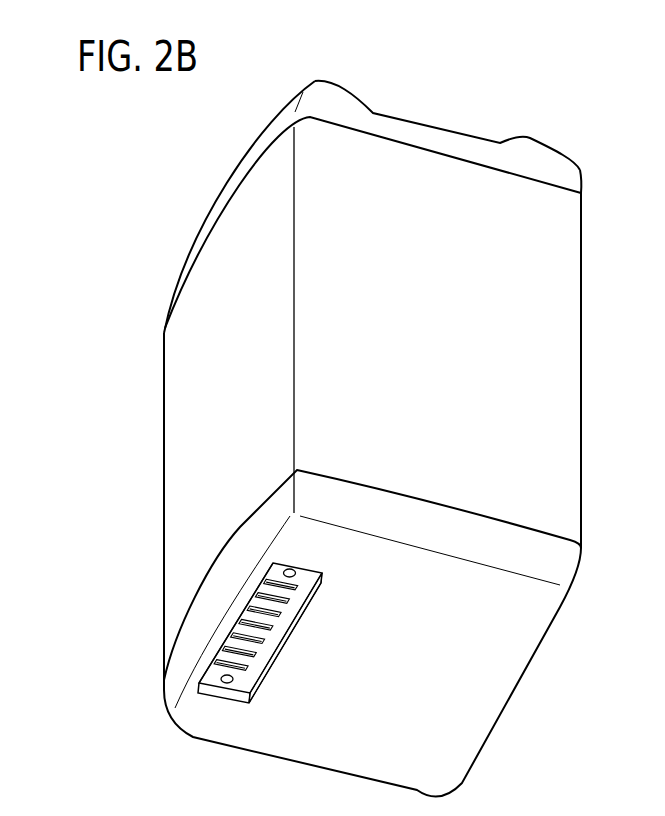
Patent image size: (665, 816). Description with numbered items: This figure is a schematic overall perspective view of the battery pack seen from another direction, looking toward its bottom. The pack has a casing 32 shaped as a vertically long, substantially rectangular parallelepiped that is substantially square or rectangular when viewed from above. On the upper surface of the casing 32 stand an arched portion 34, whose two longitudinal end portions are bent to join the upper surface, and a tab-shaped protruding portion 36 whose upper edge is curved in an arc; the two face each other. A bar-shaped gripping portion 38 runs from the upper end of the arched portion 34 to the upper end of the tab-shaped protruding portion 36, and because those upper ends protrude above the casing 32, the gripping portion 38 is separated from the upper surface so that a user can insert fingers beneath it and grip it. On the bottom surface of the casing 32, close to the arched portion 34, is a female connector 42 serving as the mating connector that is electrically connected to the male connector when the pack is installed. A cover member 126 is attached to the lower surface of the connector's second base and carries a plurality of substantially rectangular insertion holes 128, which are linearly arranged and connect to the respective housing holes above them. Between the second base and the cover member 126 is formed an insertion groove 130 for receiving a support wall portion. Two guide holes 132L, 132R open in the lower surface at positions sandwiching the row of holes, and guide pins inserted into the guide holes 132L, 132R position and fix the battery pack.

The casing 32 is at (570, 278).
The arched portion 34 is at (230, 183).
The tab-shaped protruding portion 36 is at (577, 167).
The bar-shaped gripping portion 38 is at (462, 133).
The female connector 42 is at (307, 582).
The cover member 126 is at (307, 600).
The insertion holes 128 is at (273, 615).
The insertion groove 130 is at (235, 625).
The guide hole 132L is at (291, 568).
The guide hole 132R is at (229, 684).